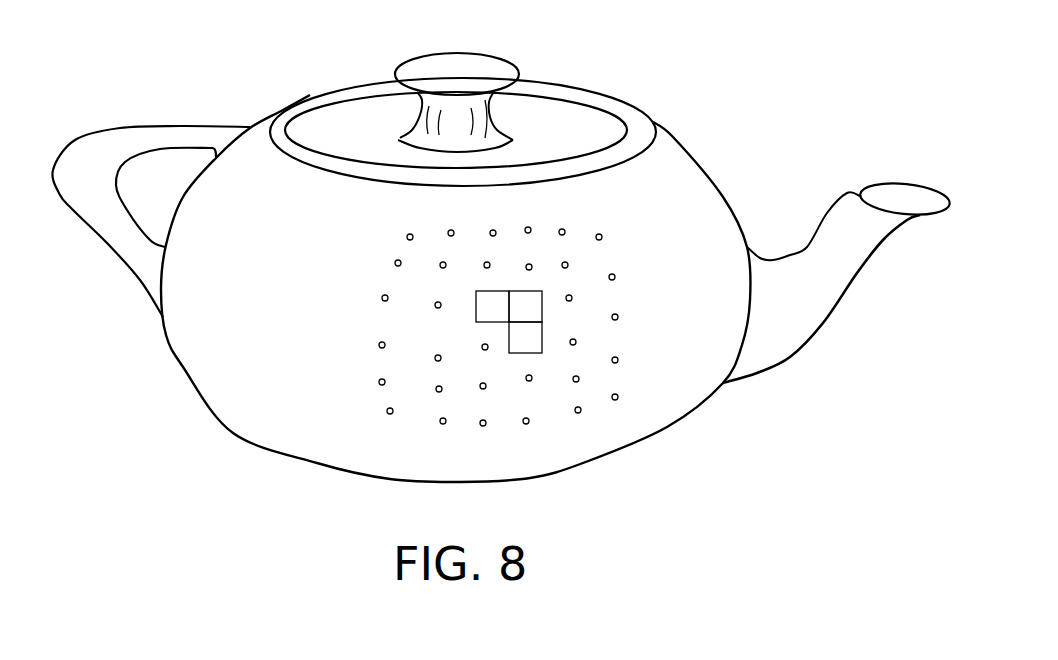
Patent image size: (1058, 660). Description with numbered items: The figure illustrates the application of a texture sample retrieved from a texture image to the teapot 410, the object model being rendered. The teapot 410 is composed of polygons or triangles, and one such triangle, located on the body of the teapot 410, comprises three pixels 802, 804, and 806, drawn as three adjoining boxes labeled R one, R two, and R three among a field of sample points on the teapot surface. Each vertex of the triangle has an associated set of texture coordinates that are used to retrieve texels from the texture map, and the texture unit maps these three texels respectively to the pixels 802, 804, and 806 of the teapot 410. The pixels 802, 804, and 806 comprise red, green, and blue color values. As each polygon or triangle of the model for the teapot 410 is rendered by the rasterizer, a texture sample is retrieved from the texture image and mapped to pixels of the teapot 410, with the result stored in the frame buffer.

The teapot 410 is at (653, 122).
The pixel 802 is at (478, 290).
The pixel 804 is at (537, 292).
The pixel 806 is at (537, 355).